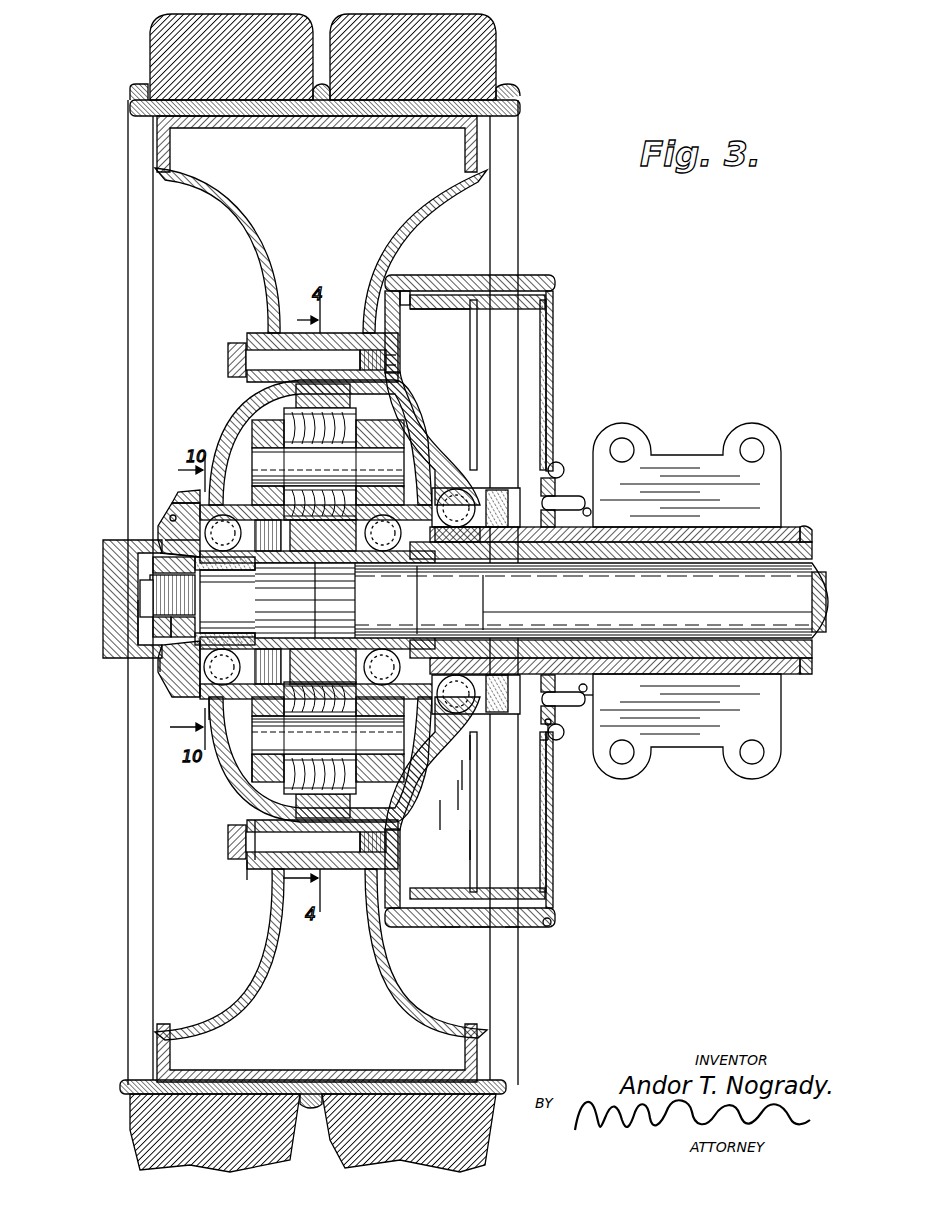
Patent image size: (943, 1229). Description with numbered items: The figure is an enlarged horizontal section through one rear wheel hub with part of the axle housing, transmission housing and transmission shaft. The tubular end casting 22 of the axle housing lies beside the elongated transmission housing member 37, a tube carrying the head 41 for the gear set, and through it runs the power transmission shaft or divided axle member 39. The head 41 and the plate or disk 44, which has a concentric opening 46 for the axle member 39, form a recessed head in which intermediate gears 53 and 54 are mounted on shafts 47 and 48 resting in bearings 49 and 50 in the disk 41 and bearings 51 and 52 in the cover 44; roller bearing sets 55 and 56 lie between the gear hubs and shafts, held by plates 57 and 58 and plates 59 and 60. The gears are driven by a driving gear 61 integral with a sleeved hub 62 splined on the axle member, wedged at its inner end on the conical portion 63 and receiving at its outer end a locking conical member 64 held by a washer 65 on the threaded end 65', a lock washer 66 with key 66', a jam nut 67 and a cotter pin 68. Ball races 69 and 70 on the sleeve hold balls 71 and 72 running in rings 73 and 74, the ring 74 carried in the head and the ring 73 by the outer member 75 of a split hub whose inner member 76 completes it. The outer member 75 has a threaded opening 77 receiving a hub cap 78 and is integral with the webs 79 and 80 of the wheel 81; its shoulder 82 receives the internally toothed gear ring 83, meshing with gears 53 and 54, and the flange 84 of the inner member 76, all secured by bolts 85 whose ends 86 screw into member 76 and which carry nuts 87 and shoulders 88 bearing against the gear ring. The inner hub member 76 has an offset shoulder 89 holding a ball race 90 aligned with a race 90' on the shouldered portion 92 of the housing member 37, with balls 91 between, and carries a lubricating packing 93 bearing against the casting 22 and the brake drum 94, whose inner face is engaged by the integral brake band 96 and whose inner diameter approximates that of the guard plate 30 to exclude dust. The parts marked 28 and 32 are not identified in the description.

The tubular end casting 22 is at (790, 680).
The bracket rivet 28 is at (585, 695).
The guard disk or plate 30 is at (550, 860).
The spring bracket 32 is at (765, 735).
The transmission housing member 37 is at (790, 538).
The power transmission shaft or divided axle member 39 is at (800, 576).
The head 41 is at (523, 493).
The plate or disk 44 is at (200, 520).
The concentric opening 46 is at (185, 520).
The shaft 47 is at (230, 468).
The shaft 48 is at (250, 757).
The bearing 49 is at (473, 482).
The bearing 50 is at (455, 812).
The bearing 51 is at (252, 455).
The bearing 52 is at (262, 780).
The gear 53 is at (400, 378).
The gear 54 is at (513, 928).
The set of roller bearings 55 is at (412, 473).
The set of roller bearings 56 is at (545, 927).
The plate 57 is at (240, 430).
The plate 58 is at (423, 450).
The plate 59 is at (258, 800).
The plate 60 is at (470, 842).
The driving gear 61 is at (170, 540).
The sleeved hub 62 is at (215, 560).
The conical portion 63 is at (550, 726).
The locking conical member 64 is at (195, 650).
The washer 65 is at (111, 693).
The threaded end 65' is at (127, 594).
The lock washer 66 is at (127, 632).
The key 66' is at (115, 623).
The jam nut 67 is at (153, 566).
The cotter pin 68 is at (145, 600).
The ball race 69 is at (105, 546).
The ball race 70 is at (565, 512).
The balls 71 is at (165, 520).
The balls 72 is at (556, 480).
The ball race or ring 73 is at (180, 530).
The ball race or ring 74 is at (556, 463).
The outer member of split hub 75 is at (200, 498).
The inner member of split hub 76 is at (456, 786).
The threaded opening 77 is at (205, 690).
The hub cap 78 is at (143, 655).
The web 79 is at (270, 258).
The web 80 is at (405, 216).
The wheel 81 is at (515, 92).
The shoulder 82 is at (262, 333).
The internally toothed gear ring 83 is at (252, 350).
The flange 84 is at (450, 926).
The bolts 85 is at (245, 866).
The bolt end 86 is at (480, 925).
The nut 87 is at (236, 855).
The shoulder 88 is at (250, 878).
The offset shoulder 89 is at (462, 762).
The ball race 90 is at (529, 780).
The ball race 90' is at (568, 754).
The balls 91 is at (547, 748).
The shouldered portion 92 is at (587, 692).
The lubricating packing 93 is at (590, 508).
The brake drum 94 is at (535, 300).
The brake band 96 is at (530, 282).